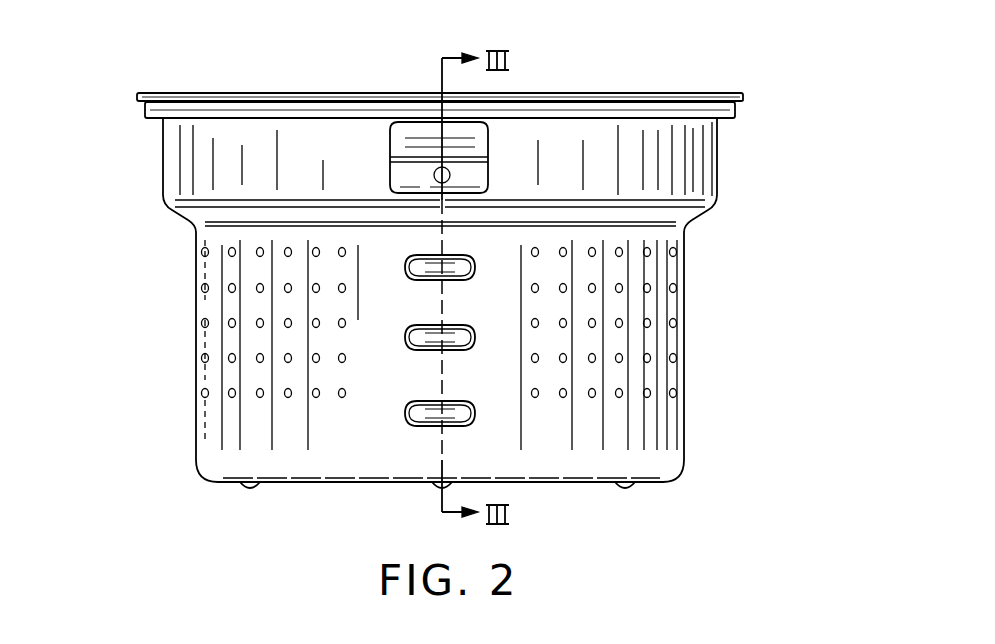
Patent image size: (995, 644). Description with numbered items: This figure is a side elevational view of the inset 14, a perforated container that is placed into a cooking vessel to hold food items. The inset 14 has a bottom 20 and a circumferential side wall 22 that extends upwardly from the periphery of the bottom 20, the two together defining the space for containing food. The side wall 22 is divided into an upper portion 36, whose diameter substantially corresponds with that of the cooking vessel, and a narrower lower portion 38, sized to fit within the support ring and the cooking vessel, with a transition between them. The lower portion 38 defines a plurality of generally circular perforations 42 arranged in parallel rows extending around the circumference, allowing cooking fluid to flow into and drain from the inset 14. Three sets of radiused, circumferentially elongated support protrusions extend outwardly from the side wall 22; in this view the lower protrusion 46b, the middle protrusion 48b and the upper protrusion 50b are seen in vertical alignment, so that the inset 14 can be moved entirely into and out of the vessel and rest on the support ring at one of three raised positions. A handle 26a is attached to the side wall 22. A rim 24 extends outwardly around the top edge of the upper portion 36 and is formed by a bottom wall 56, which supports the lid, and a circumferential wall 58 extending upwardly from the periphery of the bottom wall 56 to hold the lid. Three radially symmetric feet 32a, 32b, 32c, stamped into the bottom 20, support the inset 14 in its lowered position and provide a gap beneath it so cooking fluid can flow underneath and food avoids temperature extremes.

The inset 14 is at (452, 287).
The bottom 20 is at (283, 483).
The side wall 22 is at (686, 313).
The rim 24 is at (743, 92).
The handle 26a is at (390, 155).
The foot 32a is at (623, 487).
The foot 32b is at (436, 487).
The foot 32c is at (243, 487).
The upper portion 36 is at (718, 160).
The lower portion 38 is at (686, 270).
The perforations 42 is at (592, 391).
The support protrusion 46b is at (418, 426).
The support protrusion 48b is at (426, 327).
The support protrusion 50b is at (494, 243).
The bottom wall 56 is at (148, 122).
The circumferential wall 58 is at (142, 112).